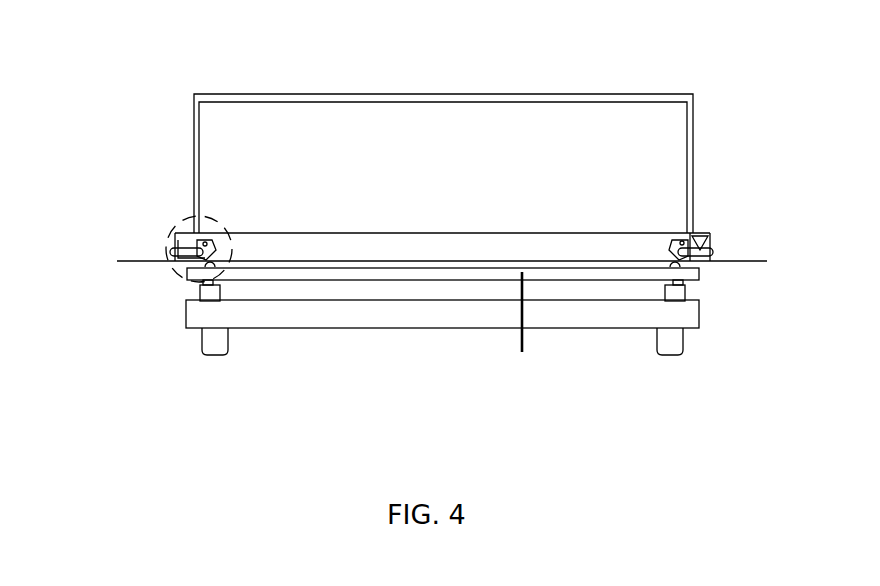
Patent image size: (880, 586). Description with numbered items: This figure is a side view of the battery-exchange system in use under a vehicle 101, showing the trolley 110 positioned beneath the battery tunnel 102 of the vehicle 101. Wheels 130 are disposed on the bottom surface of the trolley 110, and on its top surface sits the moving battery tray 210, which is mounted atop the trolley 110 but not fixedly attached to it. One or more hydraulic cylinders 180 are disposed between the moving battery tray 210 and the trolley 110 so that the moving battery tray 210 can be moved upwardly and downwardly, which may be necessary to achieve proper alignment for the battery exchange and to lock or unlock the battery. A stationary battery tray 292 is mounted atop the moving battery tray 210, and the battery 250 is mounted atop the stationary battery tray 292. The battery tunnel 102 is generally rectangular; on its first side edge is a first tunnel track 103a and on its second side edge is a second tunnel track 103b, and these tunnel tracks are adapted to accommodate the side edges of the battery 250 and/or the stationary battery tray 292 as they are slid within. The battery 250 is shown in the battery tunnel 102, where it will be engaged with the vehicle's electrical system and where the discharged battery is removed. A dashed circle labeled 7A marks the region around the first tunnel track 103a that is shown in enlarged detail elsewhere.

The vehicle 101 is at (443, 122).
The battery tunnel 102 is at (278, 93).
The battery 250 is at (452, 116).
The first tunnel track 103a is at (172, 251).
The second tunnel track 103b is at (711, 240).
The detail region 7A is at (170, 228).
The stationary battery tray 292 is at (343, 247).
The hydraulic cylinder 180 is at (202, 292).
The trolley 110 is at (437, 316).
The moving battery tray 210 is at (518, 335).
The wheel 130 is at (213, 351).